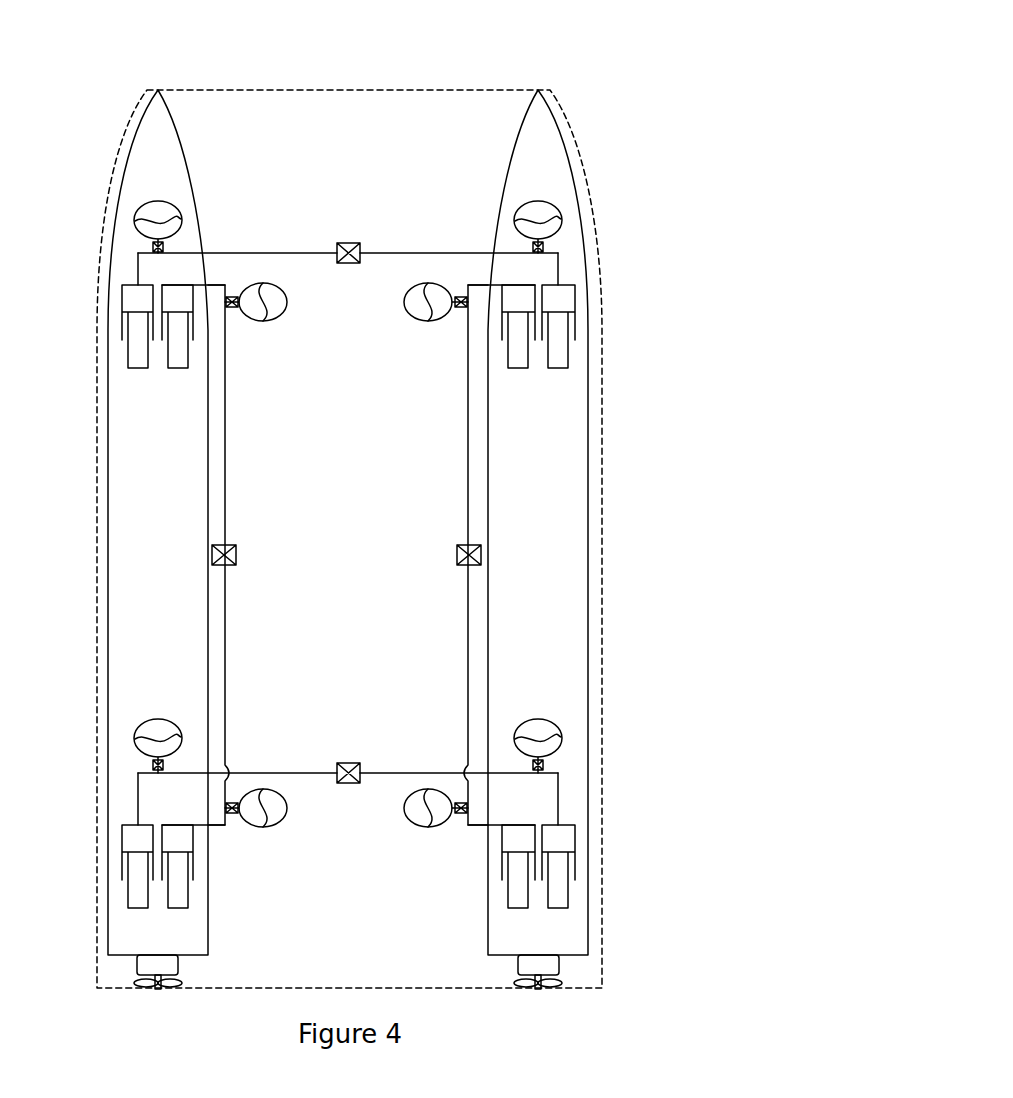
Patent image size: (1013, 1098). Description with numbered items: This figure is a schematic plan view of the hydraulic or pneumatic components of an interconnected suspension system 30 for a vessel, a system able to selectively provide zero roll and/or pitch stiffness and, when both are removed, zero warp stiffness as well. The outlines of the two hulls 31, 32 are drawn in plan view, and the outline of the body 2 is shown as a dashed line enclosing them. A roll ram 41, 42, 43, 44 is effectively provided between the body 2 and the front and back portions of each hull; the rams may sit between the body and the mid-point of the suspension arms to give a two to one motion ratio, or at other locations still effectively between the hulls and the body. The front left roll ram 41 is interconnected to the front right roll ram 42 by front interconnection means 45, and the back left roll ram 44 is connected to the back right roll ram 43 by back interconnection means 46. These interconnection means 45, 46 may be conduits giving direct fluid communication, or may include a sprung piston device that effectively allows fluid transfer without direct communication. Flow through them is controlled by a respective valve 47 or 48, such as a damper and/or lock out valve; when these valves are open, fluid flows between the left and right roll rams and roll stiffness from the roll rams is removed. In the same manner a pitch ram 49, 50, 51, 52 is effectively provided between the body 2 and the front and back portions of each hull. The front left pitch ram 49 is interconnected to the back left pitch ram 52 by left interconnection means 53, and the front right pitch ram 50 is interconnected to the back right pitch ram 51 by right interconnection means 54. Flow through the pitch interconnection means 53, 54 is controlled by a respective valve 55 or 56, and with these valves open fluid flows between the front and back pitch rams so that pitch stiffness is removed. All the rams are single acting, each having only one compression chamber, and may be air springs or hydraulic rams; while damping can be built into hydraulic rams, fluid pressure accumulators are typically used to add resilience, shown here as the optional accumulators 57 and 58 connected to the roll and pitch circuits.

The body 2 is at (318, 90).
The ballast system 30 is at (615, 88).
The hull 31 is at (115, 606).
The hull 32 is at (580, 606).
The front left roll ram 41 is at (134, 341).
The front right roll ram 42 is at (560, 341).
The back right roll ram 43 is at (542, 860).
The back left roll ram 44 is at (157, 860).
The front interconnection means 45 is at (297, 252).
The back interconnection means 46 is at (310, 772).
The valve 47 is at (352, 243).
The valve 48 is at (352, 763).
The front left pitch ram 49 is at (162, 358).
The front right pitch ram 50 is at (532, 358).
The back right pitch ram 51 is at (500, 892).
The back left pitch ram 52 is at (192, 895).
The left interconnection means 53 is at (225, 465).
The right interconnection means 54 is at (468, 467).
The valve 55 is at (237, 553).
The valve 56 is at (457, 553).
The accumulator 57 is at (518, 213).
The accumulator 58 is at (406, 318).